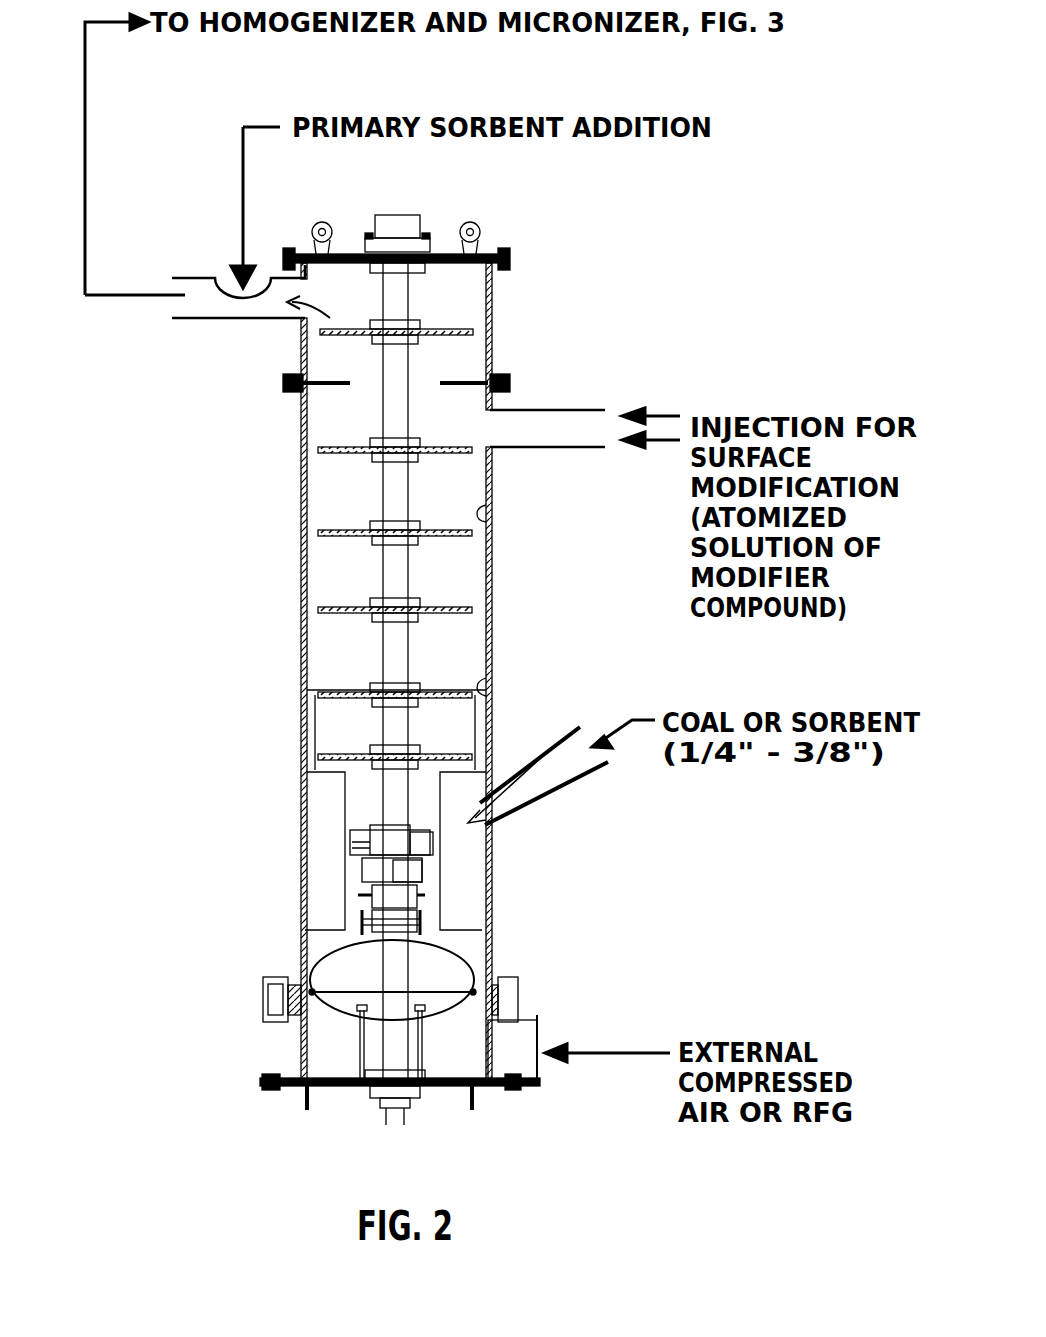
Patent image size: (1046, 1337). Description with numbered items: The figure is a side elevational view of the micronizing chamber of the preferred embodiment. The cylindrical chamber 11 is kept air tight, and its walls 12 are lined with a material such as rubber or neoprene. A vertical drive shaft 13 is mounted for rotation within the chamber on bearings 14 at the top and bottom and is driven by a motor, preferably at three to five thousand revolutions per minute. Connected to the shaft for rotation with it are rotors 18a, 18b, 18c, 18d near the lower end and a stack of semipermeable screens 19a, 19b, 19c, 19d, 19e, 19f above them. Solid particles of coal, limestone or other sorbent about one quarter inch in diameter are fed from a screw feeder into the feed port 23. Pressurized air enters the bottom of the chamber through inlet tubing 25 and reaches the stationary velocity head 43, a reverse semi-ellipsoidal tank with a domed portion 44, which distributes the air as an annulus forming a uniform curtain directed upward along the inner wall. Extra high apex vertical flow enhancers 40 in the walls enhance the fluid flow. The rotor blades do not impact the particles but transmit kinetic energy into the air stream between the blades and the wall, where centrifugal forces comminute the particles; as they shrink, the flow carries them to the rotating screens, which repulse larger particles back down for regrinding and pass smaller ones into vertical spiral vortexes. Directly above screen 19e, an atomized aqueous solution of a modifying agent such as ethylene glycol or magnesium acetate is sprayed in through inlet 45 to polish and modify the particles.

The chamber 11 is at (492, 588).
The walls 12 is at (492, 520).
The drive shaft 13 is at (405, 655).
The bearings 14 is at (388, 260).
The rotor 18a is at (433, 842).
The rotor 18b is at (417, 870).
The rotor 18c is at (425, 895).
The rotor 18d is at (420, 925).
The semipermeable screen 19a is at (352, 755).
The semipermeable screen 19b is at (352, 692).
The semipermeable screen 19c is at (352, 607).
The semipermeable screen 19d is at (352, 530).
The semipermeable screen 19e is at (352, 448).
The semipermeable screen 19f is at (352, 331).
The feed port 23 is at (600, 708).
The inlet tubing 25 is at (520, 1065).
The vertical flow enhancers 40 is at (325, 812).
The velocity head 43 is at (345, 1003).
The domed portion 44 is at (460, 972).
The inlet 45 is at (527, 416).